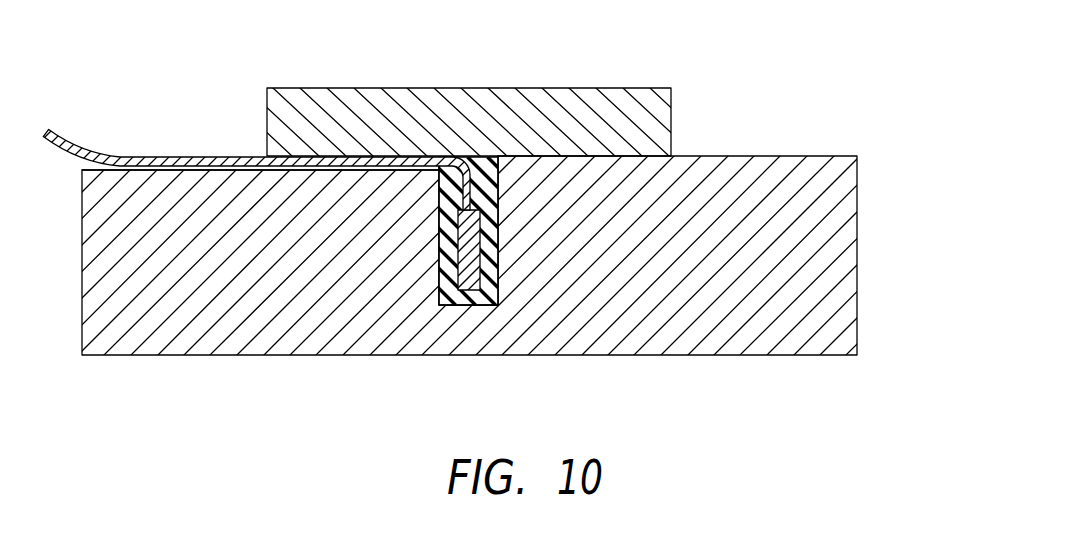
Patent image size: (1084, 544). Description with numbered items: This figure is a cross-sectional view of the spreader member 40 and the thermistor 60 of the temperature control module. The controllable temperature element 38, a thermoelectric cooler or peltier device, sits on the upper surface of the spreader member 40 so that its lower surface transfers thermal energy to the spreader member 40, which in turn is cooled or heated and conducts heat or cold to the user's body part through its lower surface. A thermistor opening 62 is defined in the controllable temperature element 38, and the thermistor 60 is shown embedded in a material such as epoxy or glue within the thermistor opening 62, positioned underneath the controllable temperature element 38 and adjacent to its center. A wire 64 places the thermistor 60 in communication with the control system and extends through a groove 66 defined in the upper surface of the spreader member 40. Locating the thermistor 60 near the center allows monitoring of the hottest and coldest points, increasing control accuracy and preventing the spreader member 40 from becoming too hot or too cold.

The controllable temperature element 38 is at (627, 107).
The spreader member 40 is at (847, 258).
The thermistor 60 is at (490, 267).
The thermistor opening 62 is at (469, 306).
The wire 64 is at (77, 141).
The groove 66 is at (262, 170).